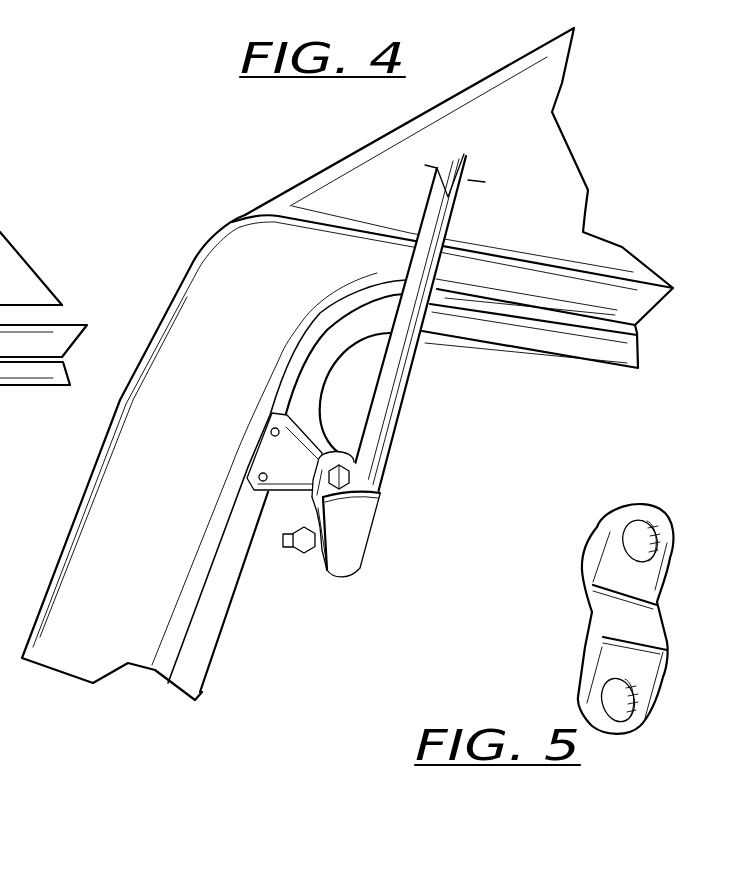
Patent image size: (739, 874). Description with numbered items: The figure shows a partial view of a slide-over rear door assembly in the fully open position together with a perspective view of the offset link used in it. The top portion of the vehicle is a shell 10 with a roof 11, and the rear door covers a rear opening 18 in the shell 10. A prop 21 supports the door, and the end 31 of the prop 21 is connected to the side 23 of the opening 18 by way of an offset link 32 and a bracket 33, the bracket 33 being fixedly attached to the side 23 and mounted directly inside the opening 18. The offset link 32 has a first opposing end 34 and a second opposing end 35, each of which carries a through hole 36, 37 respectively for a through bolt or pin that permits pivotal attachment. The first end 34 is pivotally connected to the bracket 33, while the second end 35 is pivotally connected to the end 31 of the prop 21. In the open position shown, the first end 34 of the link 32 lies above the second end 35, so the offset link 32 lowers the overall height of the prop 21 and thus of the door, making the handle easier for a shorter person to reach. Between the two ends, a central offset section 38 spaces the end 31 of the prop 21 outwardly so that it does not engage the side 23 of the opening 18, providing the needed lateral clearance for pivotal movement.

In FIG. 4, the shell 10 is at (333, 167).
In FIG. 4, the roof 11 is at (533, 193).
In FIG. 4, the rear opening 18 is at (380, 681).
In FIG. 4, the prop 21 is at (425, 348).
In FIG. 4, the side 23 is at (193, 480).
In FIG. 4, the end of the prop 31 is at (347, 557).
In FIG. 4, the offset link 32 is at (335, 468).
In FIG. 5, the offset link 32 is at (628, 610).
In FIG. 4, the bracket 33 is at (266, 495).
In FIG. 4, the first opposing end 34 is at (344, 453).
In FIG. 5, the first opposing end 34 is at (585, 541).
In FIG. 4, the second opposing end 35 is at (347, 532).
In FIG. 5, the second opposing end 35 is at (577, 660).
In FIG. 5, the through hole 36 is at (657, 530).
In FIG. 5, the through hole 37 is at (637, 688).
In FIG. 5, the central offset section 38 is at (637, 631).